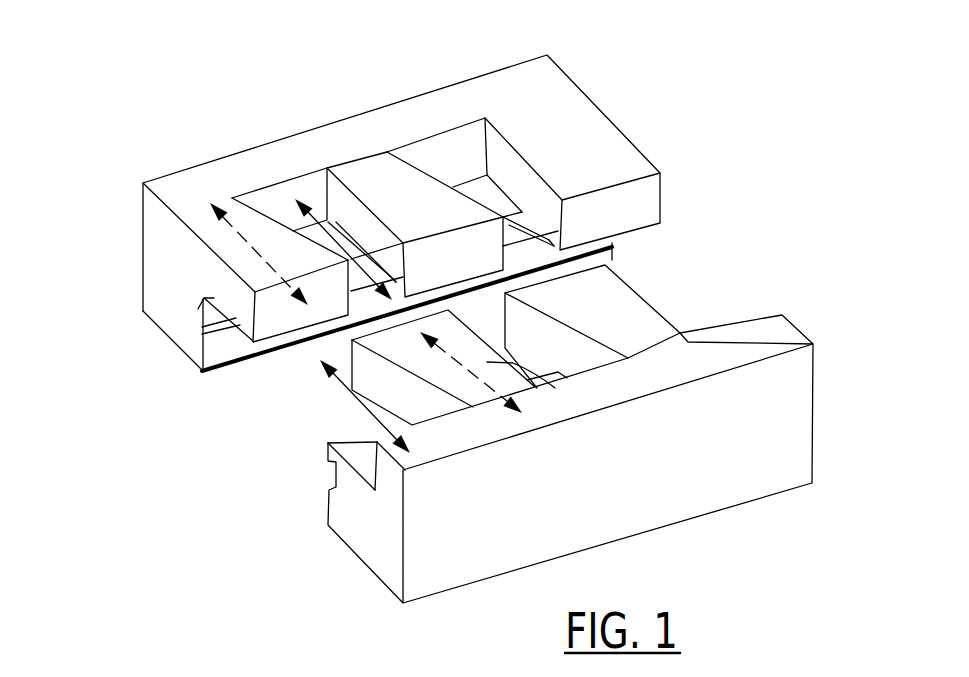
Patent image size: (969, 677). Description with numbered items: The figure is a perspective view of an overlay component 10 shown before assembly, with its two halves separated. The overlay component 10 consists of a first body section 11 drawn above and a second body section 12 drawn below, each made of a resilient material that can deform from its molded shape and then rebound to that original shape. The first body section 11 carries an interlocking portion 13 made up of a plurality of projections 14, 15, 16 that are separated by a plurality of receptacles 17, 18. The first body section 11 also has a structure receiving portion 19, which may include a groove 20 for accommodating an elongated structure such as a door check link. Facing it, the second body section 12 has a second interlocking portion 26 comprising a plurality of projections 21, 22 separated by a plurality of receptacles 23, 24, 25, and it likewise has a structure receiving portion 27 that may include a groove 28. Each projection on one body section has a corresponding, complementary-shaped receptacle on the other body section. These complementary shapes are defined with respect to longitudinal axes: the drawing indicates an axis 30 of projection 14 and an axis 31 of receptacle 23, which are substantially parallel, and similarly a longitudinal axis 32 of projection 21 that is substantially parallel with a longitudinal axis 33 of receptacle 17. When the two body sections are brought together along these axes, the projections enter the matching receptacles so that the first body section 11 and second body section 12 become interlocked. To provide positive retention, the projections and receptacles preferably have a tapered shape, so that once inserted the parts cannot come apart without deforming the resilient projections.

The overlay component 10 is at (723, 154).
The first body section 11 is at (155, 257).
The second body section 12 is at (367, 554).
The interlocking portion 13 is at (655, 129).
The projection 14 is at (268, 233).
The projection 15 is at (368, 180).
The projection 16 is at (570, 125).
The receptacle 17 is at (303, 180).
The receptacle 18 is at (457, 133).
The structure receiving portion 19 is at (220, 367).
The groove 20 is at (202, 335).
The projection 21 is at (577, 348).
The projection 22 is at (622, 318).
The receptacle 23 is at (430, 403).
The receptacle 24 is at (608, 310).
The receptacle 25 is at (743, 305).
The second interlocking portion 26 is at (684, 250).
The structure receiving portion 27 is at (309, 505).
The groove 28 is at (330, 472).
The axis 30 is at (232, 232).
The axis 31 is at (368, 410).
The longitudinal axis 32 is at (502, 432).
The longitudinal axis 33 is at (343, 237).